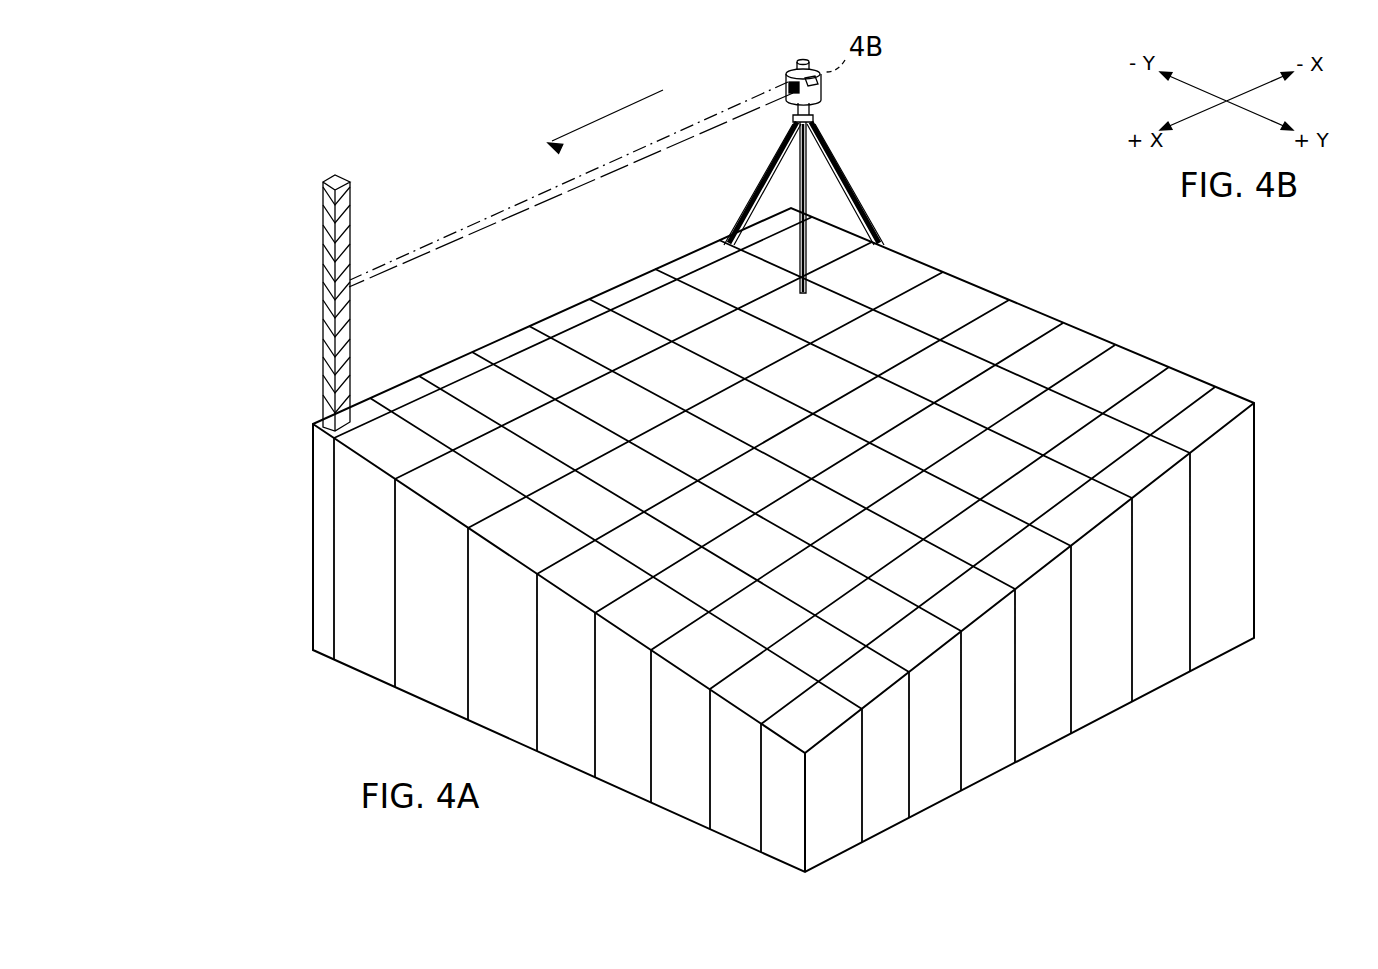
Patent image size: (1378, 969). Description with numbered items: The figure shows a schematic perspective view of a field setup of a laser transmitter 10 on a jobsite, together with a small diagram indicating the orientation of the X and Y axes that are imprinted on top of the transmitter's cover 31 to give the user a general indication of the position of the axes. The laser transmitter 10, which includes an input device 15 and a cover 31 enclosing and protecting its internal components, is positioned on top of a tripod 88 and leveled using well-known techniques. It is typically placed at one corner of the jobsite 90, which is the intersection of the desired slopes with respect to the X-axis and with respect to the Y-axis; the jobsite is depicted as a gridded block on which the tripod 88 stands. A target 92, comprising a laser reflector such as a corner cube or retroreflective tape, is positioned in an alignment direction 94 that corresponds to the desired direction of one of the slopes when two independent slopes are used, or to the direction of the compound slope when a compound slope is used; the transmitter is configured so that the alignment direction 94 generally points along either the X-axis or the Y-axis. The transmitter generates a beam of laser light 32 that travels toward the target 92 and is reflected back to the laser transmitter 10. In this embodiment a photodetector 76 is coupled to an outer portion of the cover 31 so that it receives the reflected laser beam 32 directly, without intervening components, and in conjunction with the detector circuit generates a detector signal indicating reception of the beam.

The laser transmitter 10 is at (831, 114).
The input device 15 is at (812, 105).
The cover 31 is at (788, 96).
The beam of laser light 32 is at (748, 96).
The photodetector 76 is at (793, 112).
The tripod 88 is at (843, 172).
The corner of a jobsite 90 is at (796, 212).
The target 92 is at (347, 180).
The alignment direction 94 is at (618, 112).